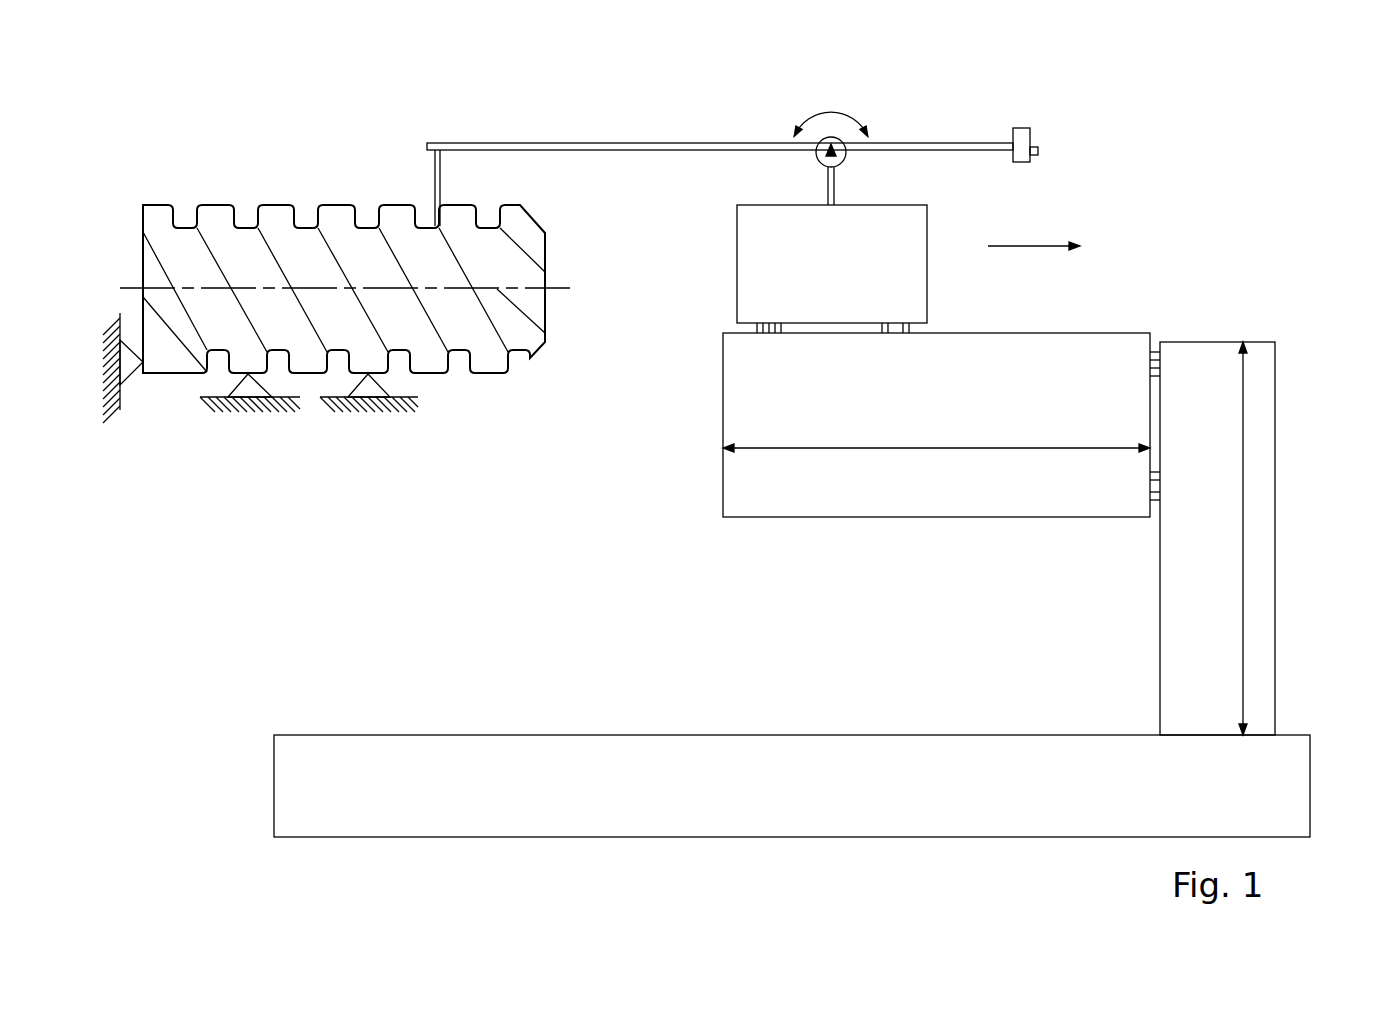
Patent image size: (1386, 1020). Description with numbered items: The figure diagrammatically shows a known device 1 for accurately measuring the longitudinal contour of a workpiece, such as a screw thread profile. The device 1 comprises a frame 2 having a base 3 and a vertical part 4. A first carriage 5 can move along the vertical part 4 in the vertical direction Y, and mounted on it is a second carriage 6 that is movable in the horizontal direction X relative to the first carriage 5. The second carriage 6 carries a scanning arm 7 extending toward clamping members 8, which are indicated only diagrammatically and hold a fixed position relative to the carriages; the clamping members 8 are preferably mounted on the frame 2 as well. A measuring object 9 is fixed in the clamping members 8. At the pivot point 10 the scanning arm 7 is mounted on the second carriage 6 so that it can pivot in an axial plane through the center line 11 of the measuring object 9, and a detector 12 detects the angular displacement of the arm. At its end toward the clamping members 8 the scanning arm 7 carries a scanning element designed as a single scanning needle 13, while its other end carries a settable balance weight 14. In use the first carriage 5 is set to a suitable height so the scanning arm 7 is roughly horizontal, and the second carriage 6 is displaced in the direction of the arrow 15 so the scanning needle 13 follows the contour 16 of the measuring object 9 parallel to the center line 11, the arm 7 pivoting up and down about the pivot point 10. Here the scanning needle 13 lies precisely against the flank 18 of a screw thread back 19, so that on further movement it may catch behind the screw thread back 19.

The device 1 is at (1154, 207).
The frame 2 is at (1305, 695).
The base 3 is at (991, 801).
The vertical part 4 is at (1271, 572).
The first carriage 5 is at (1025, 497).
The second carriage 6 is at (928, 298).
The scanning arm 7 is at (583, 143).
The clamping members 8 is at (110, 407).
The measuring object 9 is at (172, 230).
The pivot point 10 is at (829, 150).
The center line 11 is at (558, 290).
The detector 12 is at (828, 145).
The scanning needle 13 is at (434, 185).
The settable balance weight 14 is at (1022, 140).
The arrow 15 is at (1025, 246).
The contour 16 is at (335, 144).
The flank 18 is at (440, 226).
The screw thread back 19 is at (452, 206).